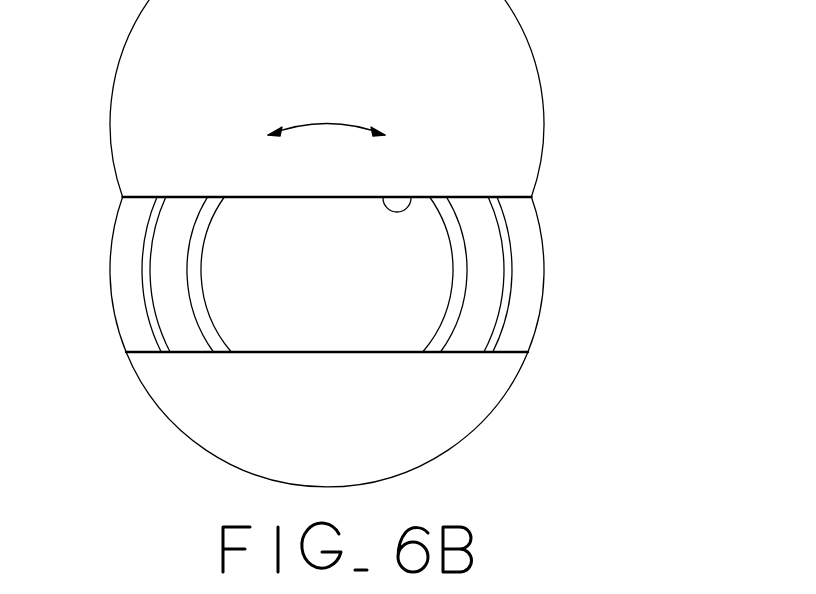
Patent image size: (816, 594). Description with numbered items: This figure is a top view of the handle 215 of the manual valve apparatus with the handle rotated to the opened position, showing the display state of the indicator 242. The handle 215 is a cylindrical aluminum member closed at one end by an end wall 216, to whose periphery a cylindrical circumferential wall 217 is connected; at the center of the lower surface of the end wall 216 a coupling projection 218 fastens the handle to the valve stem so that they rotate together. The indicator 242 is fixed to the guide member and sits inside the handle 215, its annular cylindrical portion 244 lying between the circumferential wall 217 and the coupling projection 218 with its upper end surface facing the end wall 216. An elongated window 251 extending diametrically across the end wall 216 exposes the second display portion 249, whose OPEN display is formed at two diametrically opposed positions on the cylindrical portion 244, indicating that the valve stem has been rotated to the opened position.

The handle 215 is at (422, 72).
The end wall 216 is at (448, 428).
The circumferential wall 217 is at (528, 261).
The coupling projection 218 is at (309, 331).
The indicator 242 is at (141, 315).
The cylindrical portion 244 is at (178, 278).
The second display portion 249 is at (168, 213).
The window 251 is at (412, 198).